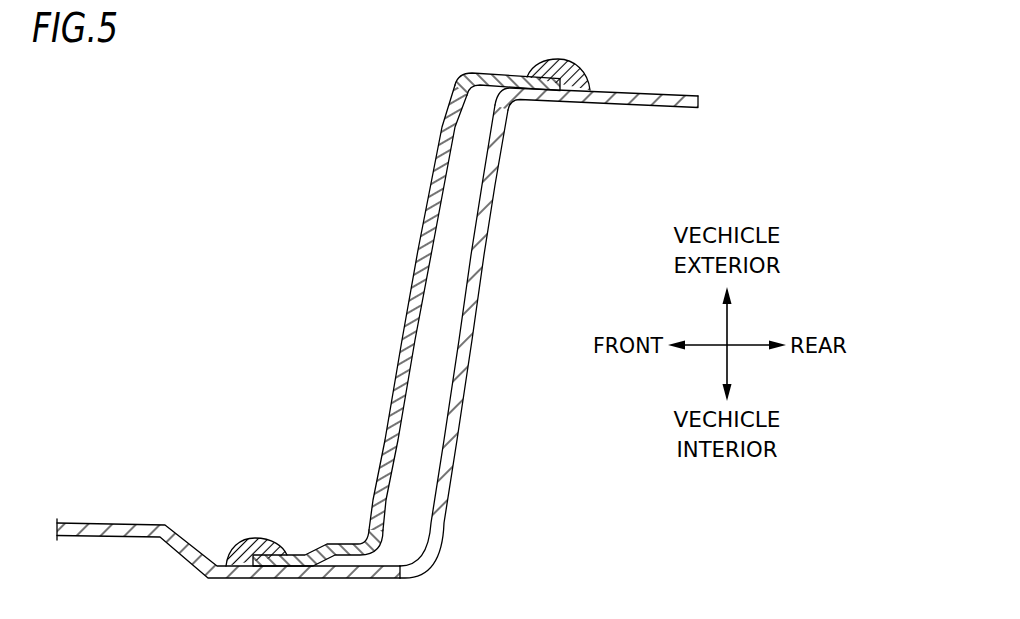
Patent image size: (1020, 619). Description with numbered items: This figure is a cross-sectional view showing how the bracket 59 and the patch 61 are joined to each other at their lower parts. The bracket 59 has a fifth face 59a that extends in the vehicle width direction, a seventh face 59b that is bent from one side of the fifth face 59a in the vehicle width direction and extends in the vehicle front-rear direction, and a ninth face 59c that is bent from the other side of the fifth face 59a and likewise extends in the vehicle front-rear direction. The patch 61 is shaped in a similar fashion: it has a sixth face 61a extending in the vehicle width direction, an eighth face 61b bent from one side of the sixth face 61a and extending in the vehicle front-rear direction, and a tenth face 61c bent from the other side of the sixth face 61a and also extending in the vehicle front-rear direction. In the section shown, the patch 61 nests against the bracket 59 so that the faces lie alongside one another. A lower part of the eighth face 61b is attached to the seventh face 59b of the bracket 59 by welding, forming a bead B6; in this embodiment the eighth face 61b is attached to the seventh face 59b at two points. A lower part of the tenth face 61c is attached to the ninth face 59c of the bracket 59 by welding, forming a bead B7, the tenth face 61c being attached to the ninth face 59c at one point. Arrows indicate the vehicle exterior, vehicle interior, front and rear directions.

The bracket 59 is at (377, 333).
The fifth face 59a is at (452, 455).
The seventh face 59b is at (578, 102).
The ninth face 59c is at (306, 548).
The patch 61 is at (406, 317).
The sixth face 61a is at (421, 240).
The eighth face 61b is at (467, 68).
The tenth face 61c is at (335, 543).
The bead B6 is at (572, 61).
The bead B7 is at (260, 536).